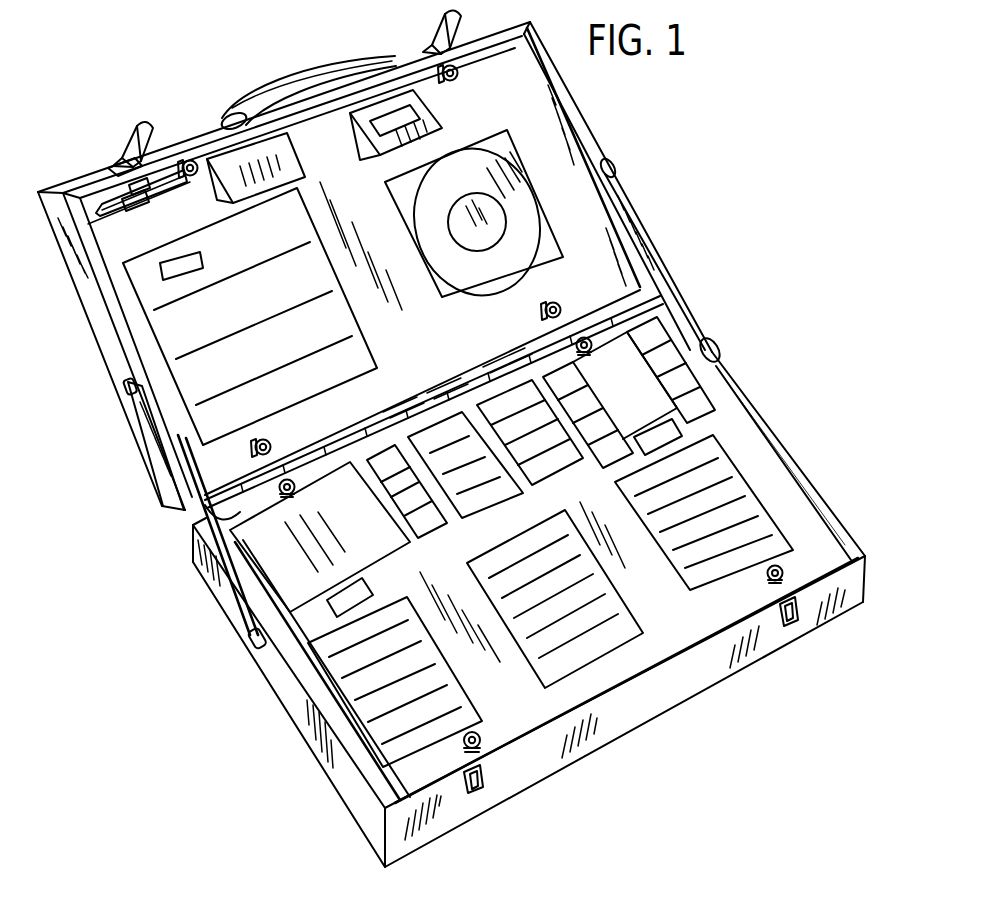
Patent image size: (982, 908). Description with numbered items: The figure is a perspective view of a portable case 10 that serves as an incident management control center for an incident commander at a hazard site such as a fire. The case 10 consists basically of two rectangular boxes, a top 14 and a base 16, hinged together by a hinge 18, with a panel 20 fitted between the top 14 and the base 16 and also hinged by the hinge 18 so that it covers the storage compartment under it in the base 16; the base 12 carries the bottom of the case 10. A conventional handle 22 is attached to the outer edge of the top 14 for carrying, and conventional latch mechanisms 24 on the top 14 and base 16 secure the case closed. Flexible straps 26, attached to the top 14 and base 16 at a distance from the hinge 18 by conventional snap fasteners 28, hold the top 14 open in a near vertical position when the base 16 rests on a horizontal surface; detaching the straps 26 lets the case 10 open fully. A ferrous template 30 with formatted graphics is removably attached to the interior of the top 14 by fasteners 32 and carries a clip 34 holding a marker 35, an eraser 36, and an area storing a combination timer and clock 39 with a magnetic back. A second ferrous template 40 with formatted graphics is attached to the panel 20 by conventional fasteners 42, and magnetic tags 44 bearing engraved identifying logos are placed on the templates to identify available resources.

The case 10 is at (760, 352).
The base 12 is at (767, 425).
The top 14 is at (92, 303).
The base 16 is at (298, 697).
The hinge 18 is at (198, 533).
The panel 20 is at (827, 533).
The handle 22 is at (265, 90).
The latch mechanisms 24 is at (122, 148).
The flexible straps 26 is at (170, 465).
The snap fasteners 28 is at (126, 388).
The template 30 is at (426, 354).
The fasteners 32 is at (193, 178).
The clip 34 is at (150, 182).
The marker 35 is at (103, 205).
The eraser 36 is at (225, 157).
The combination timer and clock 39 is at (442, 112).
The template 40 is at (682, 638).
The fasteners 42 is at (575, 344).
The magnetic tags 44 is at (200, 257).